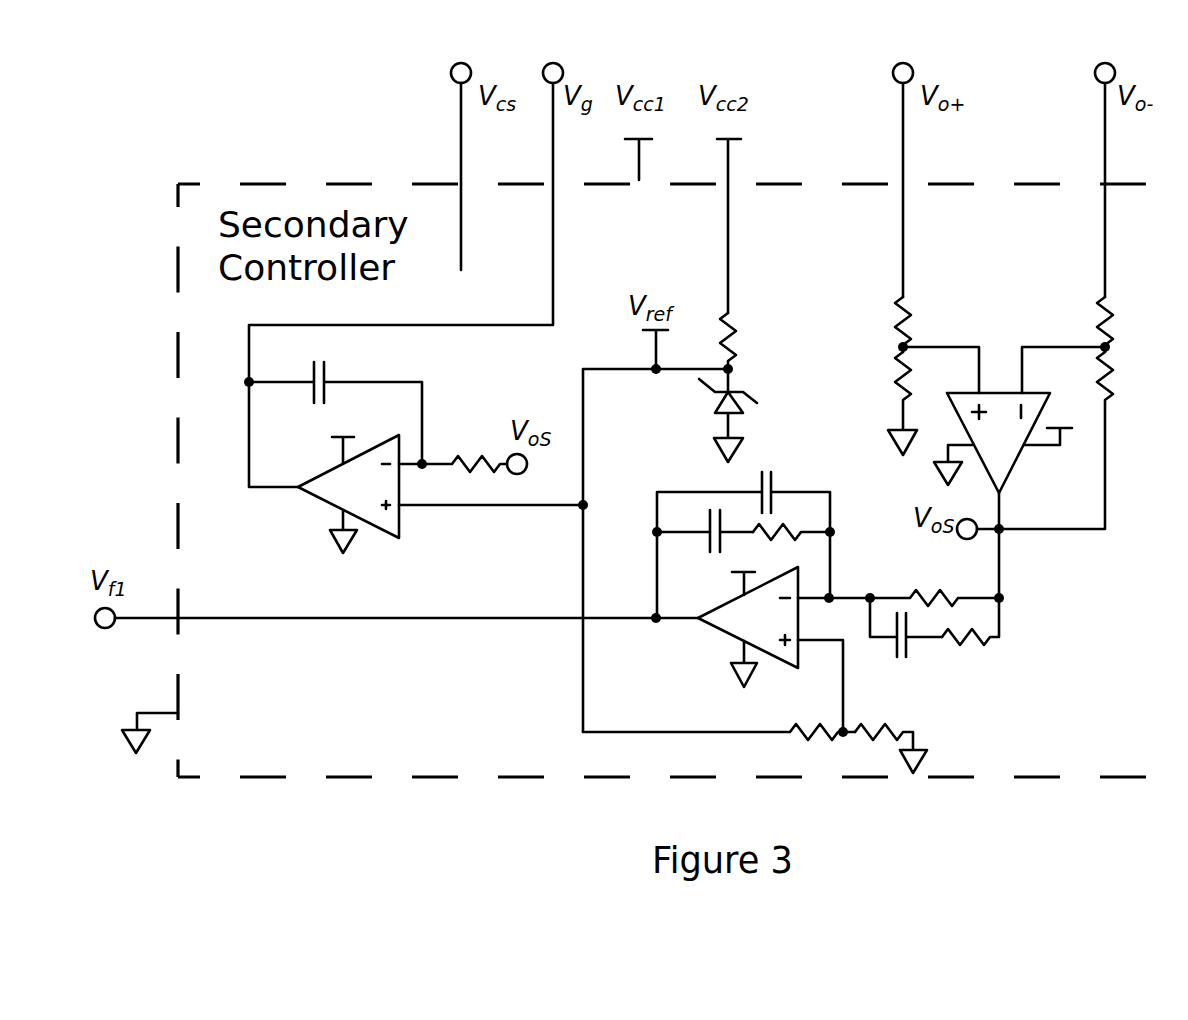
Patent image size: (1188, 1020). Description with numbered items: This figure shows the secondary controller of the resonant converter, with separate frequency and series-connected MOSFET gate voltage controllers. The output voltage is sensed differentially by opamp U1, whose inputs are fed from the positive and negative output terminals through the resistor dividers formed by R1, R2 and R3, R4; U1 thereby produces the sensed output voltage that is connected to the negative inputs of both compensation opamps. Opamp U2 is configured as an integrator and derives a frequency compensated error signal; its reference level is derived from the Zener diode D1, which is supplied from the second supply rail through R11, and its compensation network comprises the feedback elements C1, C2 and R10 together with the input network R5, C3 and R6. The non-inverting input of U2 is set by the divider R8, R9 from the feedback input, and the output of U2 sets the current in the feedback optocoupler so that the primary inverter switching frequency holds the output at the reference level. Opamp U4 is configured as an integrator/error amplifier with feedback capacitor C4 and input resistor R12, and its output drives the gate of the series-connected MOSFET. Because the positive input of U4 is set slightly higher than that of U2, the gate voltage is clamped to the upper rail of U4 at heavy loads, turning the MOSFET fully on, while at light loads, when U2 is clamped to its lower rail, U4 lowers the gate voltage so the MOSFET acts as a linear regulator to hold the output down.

The resistor R1 is at (884, 324).
The resistor R2 is at (886, 403).
The resistor R3 is at (1128, 324).
The resistor R4 is at (1079, 440).
The resistor R5 is at (934, 575).
The resistor R6 is at (970, 642).
The resistor R8 is at (719, 704).
The resistor R9 is at (891, 726).
The resistor R10 is at (794, 516).
The resistor R11 is at (754, 341).
The resistor R12 is at (472, 439).
The capacitor C1 is at (743, 534).
The capacitor C2 is at (702, 521).
The capacitor C3 is at (905, 641).
The capacitor C4 is at (333, 402).
The Zener diode D1 is at (749, 415).
The opamp U1 is at (1004, 472).
The opamp U2 is at (760, 646).
The opamp U4 is at (433, 490).